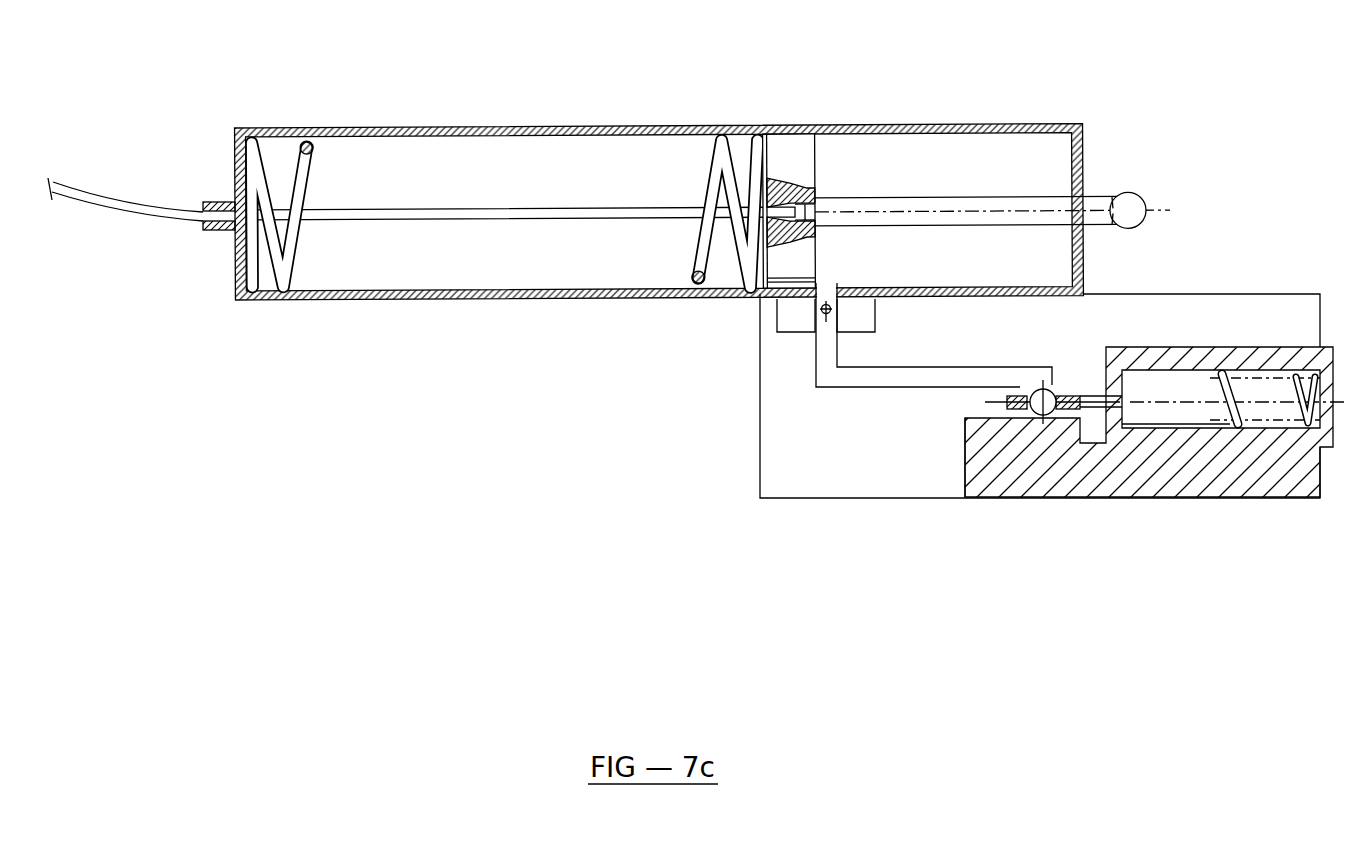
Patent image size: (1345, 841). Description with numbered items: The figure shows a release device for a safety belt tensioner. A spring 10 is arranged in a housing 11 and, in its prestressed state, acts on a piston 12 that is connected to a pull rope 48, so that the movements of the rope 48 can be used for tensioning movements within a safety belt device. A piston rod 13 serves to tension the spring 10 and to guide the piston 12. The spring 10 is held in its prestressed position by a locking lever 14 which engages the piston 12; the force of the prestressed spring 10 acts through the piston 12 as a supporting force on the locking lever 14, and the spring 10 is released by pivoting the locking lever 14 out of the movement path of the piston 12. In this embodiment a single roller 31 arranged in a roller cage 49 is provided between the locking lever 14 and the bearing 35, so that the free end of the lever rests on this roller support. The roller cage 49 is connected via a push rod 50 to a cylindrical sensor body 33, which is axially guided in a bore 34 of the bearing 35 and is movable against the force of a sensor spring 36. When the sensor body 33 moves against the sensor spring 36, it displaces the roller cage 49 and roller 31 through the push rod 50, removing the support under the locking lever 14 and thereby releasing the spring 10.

The pull rope 48 is at (122, 205).
The spring 10 is at (722, 150).
The housing 11 is at (860, 128).
The piston 12 is at (792, 148).
The piston rod 13 is at (908, 202).
The locking lever 14 is at (816, 387).
The roller 31 is at (965, 470).
The roller cage 49 is at (1045, 418).
The push rod 50 is at (1078, 430).
The bore 34 is at (1140, 432).
The sensor body 33 is at (1205, 408).
The sensor spring 36 is at (1240, 432).
The bearing 35 is at (1283, 478).